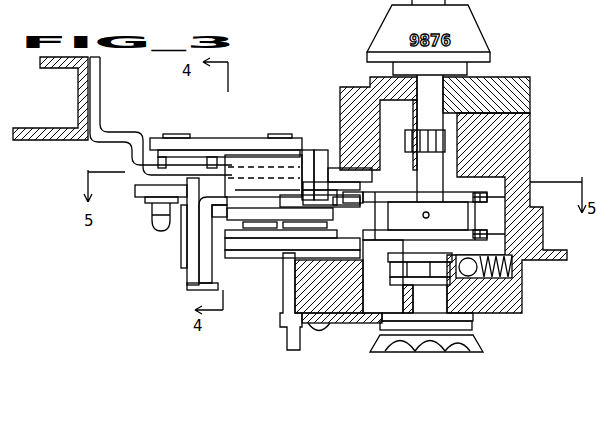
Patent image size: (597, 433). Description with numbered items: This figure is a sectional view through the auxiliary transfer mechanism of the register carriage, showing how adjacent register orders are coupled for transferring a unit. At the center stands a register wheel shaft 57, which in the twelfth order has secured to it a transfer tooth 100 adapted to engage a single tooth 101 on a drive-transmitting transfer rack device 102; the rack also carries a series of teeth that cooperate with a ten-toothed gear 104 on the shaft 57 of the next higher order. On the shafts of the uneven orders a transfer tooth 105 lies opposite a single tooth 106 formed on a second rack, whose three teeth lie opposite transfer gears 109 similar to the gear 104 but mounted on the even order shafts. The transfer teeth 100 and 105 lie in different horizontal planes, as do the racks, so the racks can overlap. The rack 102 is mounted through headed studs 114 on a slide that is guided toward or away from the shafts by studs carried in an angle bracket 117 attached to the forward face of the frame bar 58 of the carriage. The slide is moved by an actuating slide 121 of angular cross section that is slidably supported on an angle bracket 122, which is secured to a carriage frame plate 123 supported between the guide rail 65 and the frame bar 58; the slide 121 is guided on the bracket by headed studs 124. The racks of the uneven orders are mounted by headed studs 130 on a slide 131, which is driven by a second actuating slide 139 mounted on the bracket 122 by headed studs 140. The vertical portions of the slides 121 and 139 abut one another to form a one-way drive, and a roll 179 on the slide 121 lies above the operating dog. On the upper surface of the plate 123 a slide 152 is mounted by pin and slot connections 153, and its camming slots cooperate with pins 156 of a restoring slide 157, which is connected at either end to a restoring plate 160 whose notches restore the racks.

The guide rail 65 is at (50, 128).
The carriage frame plate 123 is at (108, 142).
The headed studs 140 is at (183, 226).
The headed studs 124 is at (184, 253).
The angle bracket 122 is at (191, 268).
The actuating slide 121 is at (200, 292).
The roll 179 is at (206, 297).
The slide 152 is at (175, 138).
The pin and slot connections 153 is at (164, 136).
The pins 156 is at (277, 134).
The restoring slide 157 is at (205, 157).
The actuating slide 139 is at (213, 193).
The slide 131 is at (313, 183).
The headed studs 130 is at (323, 193).
The restoring plate 160 is at (277, 212).
The drive-transmitting transfer rack device 102 is at (290, 236).
The angle bracket 117 is at (262, 256).
The headed studs 114 is at (317, 226).
The single tooth 106 is at (356, 193).
The single tooth 101 is at (349, 230).
The transfer tooth 105 is at (376, 203).
The transfer tooth 100 is at (371, 242).
The transfer gears 109 is at (505, 197).
The ten-toothed gear 104 is at (505, 234).
The register wheel shaft 57 is at (432, 93).
The frame bar 58 is at (547, 98).